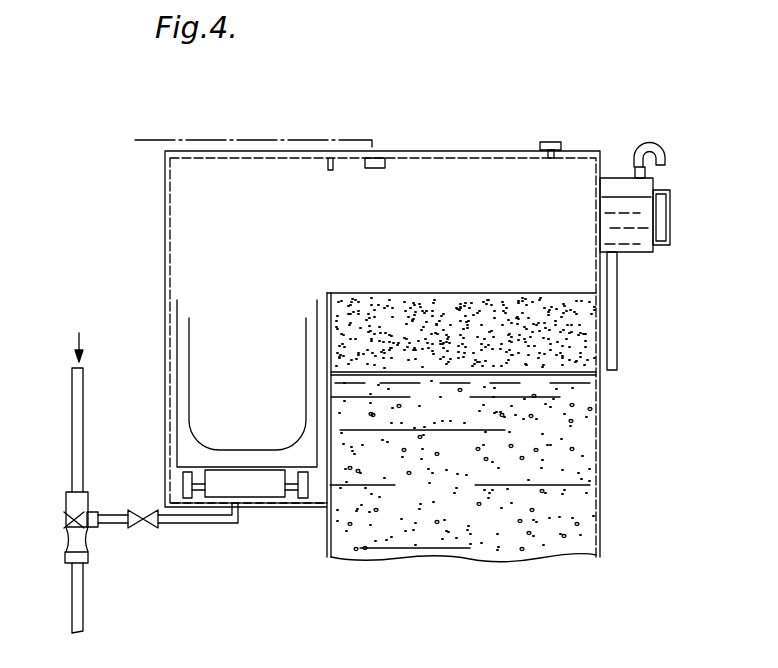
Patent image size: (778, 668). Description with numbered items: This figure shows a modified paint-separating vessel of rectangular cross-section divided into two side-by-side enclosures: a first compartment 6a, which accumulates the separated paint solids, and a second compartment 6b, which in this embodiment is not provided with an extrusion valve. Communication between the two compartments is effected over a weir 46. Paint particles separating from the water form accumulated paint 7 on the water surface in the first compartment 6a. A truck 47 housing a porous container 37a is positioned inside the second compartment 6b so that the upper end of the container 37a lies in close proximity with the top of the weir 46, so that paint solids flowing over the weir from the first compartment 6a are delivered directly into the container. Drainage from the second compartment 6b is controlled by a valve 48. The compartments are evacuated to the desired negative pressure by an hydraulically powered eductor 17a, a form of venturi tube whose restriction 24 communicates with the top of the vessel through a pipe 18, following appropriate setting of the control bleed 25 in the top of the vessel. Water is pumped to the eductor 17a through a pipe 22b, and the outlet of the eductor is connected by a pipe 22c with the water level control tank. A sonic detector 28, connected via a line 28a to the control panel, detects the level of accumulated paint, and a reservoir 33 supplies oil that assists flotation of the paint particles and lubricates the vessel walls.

The first compartment 6a is at (483, 522).
The second compartment 6b is at (165, 280).
The accumulated paint 7 is at (484, 312).
The hydraulically powered eductor 17a is at (67, 497).
The pipe 18 is at (188, 526).
The pipe 22b is at (82, 393).
The pipe 22c is at (78, 607).
The restriction 24 is at (66, 522).
The control bleed 25 is at (541, 146).
The sonic detector 28 is at (383, 168).
The line 28a is at (206, 121).
The reservoir 33 is at (640, 254).
The porous container 37a is at (191, 357).
The weir 46 is at (329, 287).
The truck 47 is at (176, 432).
The valve 48 is at (135, 528).